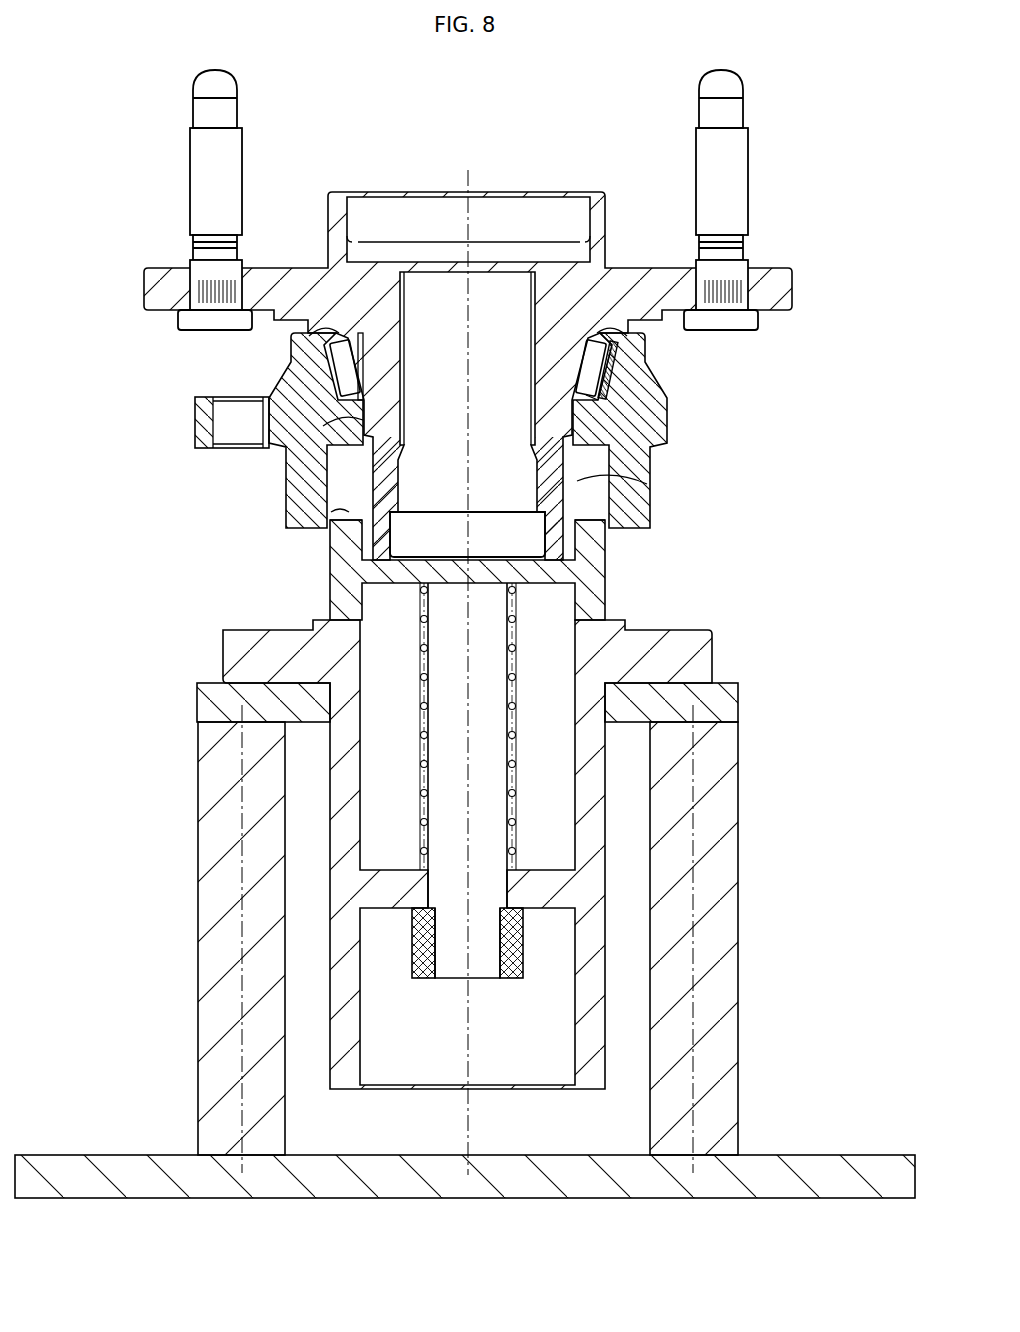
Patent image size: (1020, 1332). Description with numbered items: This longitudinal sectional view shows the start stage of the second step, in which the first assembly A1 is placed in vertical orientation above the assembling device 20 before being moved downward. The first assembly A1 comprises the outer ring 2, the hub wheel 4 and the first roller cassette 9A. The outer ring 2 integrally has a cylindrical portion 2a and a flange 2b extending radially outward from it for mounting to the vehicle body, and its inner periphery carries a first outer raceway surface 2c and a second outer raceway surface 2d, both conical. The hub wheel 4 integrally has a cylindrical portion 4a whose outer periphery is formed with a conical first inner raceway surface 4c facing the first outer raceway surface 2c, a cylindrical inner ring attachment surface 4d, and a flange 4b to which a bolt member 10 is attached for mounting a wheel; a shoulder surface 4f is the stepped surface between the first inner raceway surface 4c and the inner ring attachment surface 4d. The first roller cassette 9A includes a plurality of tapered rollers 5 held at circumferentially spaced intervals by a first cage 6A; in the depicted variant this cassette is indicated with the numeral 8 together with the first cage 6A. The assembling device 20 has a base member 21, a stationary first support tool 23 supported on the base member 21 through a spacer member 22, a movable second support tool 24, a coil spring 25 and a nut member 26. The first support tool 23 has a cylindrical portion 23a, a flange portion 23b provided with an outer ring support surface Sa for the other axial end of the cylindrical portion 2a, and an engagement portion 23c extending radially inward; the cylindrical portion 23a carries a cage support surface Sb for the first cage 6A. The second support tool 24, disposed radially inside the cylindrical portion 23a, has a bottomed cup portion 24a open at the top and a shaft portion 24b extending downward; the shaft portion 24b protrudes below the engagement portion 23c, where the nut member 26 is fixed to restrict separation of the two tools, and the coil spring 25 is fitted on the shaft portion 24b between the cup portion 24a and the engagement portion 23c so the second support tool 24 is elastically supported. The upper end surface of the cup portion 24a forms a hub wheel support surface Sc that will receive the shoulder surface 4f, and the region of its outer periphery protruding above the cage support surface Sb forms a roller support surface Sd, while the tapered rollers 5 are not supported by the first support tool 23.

The first assembly A1 is at (576, 166).
The bolt member 10 is at (206, 173).
The hub wheel 4 is at (640, 282).
The flange 4b is at (775, 283).
The cylindrical portion 4a is at (550, 402).
The first inner raceway surface 4c is at (352, 374).
The inner ring attachment surface 4d is at (380, 481).
The shoulder surface 4f is at (545, 457).
The outer ring 2 is at (670, 410).
The cylindrical portion 2a is at (660, 430).
The flange 2b is at (205, 414).
The first outer raceway surface 2c is at (310, 340).
The second outer raceway surface 2d is at (300, 490).
The first roller cassette 9A is at (572, 342).
The seal with encoder 8 is at (669, 370).
The first cage 6A is at (622, 350).
The tapered rollers 5 is at (616, 382).
The outer ring support surface Sa is at (258, 630).
The cage support surface Sb is at (347, 512).
The hub wheel support surface Sc is at (323, 424).
The roller support surface Sd is at (585, 478).
The assembling device 20 is at (153, 683).
The base member 21 is at (166, 1092).
The spacer member 22 is at (722, 705).
The first support tool 23 is at (688, 624).
The cylindrical portion 23a is at (340, 815).
The flange portion 23b is at (680, 655).
The engagement portion 23c is at (390, 900).
The second support tool 24 is at (534, 590).
The cup portion 24a is at (583, 545).
The shaft portion 24b is at (495, 690).
The coil spring 25 is at (516, 750).
The nut member 26 is at (512, 976).